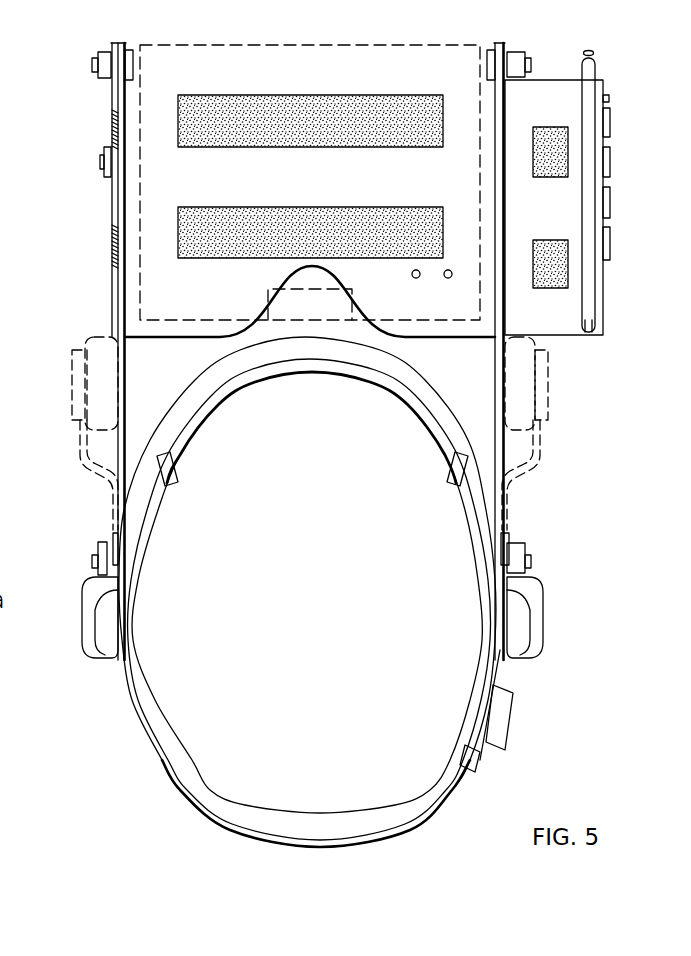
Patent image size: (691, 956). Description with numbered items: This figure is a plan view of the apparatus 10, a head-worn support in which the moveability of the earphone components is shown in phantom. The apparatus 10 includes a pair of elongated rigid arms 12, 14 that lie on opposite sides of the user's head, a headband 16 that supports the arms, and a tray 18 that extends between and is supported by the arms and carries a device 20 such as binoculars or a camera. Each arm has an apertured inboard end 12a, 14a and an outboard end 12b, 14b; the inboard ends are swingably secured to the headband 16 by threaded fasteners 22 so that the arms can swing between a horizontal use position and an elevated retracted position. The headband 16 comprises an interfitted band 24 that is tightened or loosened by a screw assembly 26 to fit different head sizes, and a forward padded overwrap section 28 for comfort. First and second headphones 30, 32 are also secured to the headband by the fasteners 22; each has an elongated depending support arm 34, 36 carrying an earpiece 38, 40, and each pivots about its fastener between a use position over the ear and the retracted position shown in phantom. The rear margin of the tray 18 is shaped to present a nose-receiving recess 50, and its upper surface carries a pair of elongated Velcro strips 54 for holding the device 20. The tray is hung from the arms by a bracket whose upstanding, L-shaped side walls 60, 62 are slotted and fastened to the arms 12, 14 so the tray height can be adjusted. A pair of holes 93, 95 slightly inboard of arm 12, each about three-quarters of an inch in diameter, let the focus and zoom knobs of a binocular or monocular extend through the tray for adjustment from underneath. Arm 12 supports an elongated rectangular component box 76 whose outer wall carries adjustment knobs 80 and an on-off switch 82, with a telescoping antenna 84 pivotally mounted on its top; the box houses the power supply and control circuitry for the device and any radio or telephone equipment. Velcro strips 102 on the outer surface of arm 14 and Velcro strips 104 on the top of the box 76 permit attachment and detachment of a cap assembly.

The apparatus 10 is at (608, 310).
The arm 12 is at (535, 508).
The inboard end of arm 12a is at (545, 590).
The outboard end of arm 12b is at (507, 45).
The arm 14 is at (90, 497).
The inboard end of arm 14a is at (118, 590).
The outboard end of arm 14b is at (112, 44).
The headband 16 is at (150, 803).
The tray 18 is at (135, 323).
The device 20 is at (135, 290).
The threaded fasteners 22 is at (92, 560).
The band 24 is at (187, 773).
The screw assembly 26 is at (478, 759).
The forward padded overwrap section 28 is at (337, 360).
The first headphone 30 is at (542, 400).
The second headphone 32 is at (78, 400).
The support arm 34 is at (540, 437).
The support arm 36 is at (80, 437).
The earpiece 38 is at (525, 359).
The earpiece 40 is at (95, 359).
The nose-receiving recess 50 is at (338, 283).
The Velcro strips 54 is at (323, 97).
The side wall 60 is at (508, 73).
The side wall 62 is at (104, 70).
The component box 76 is at (575, 127).
The adjustment knobs 80 is at (606, 208).
The on-off switch 82 is at (609, 98).
The telescoping antenna 84 is at (590, 183).
The hole 93 is at (448, 278).
The hole 95 is at (416, 278).
The Velcro strips 102 is at (112, 138).
The Velcro strips 104 is at (545, 157).